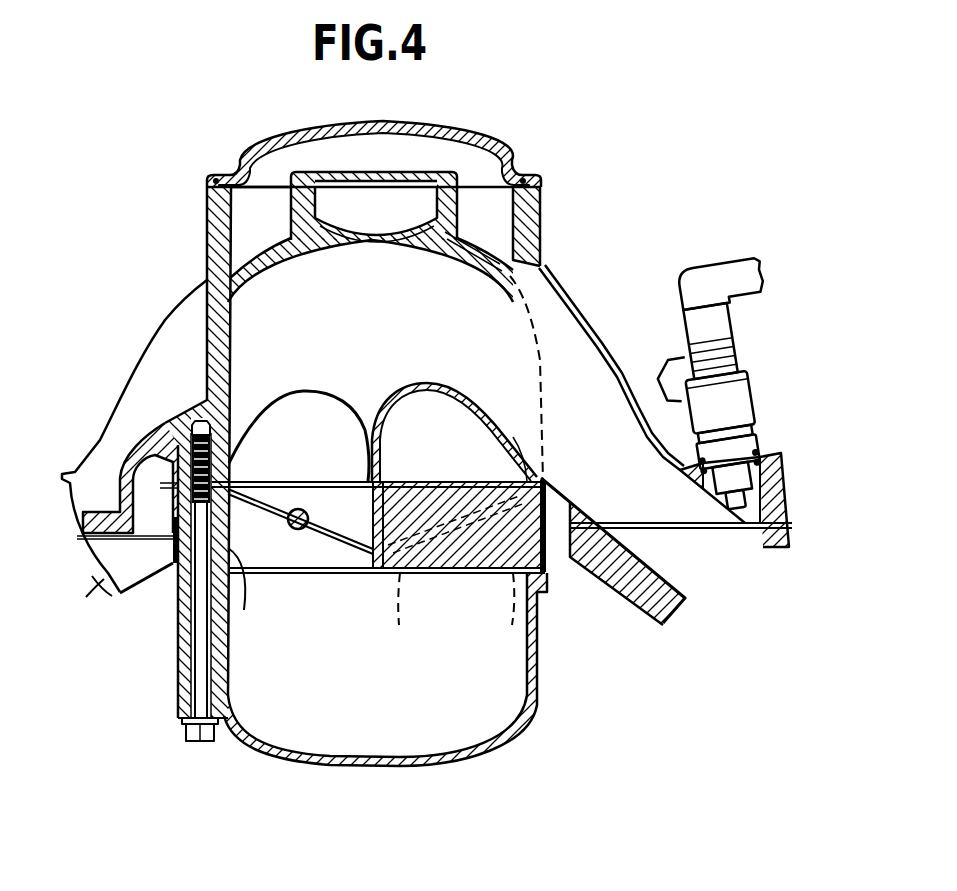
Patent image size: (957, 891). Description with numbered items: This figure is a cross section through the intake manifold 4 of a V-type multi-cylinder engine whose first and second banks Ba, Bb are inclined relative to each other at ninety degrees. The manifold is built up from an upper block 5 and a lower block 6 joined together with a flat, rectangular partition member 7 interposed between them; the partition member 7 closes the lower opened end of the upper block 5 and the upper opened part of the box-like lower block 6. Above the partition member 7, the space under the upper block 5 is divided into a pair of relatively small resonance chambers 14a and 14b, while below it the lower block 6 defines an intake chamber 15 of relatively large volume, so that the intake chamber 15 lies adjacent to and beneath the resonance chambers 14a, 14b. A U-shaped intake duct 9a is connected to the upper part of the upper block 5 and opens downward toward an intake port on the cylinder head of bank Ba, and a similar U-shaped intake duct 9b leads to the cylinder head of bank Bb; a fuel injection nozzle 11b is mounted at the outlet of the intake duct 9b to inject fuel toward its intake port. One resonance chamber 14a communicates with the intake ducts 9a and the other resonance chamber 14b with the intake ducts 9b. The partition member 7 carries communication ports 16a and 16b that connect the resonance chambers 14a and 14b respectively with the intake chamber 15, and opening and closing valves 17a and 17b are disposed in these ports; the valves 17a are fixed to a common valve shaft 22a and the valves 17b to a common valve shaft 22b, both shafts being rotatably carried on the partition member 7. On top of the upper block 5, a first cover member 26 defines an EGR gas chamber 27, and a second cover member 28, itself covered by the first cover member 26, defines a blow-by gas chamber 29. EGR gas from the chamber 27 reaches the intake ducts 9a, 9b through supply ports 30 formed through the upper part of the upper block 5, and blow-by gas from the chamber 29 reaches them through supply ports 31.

The intake manifold 4 is at (553, 206).
The upper block 5 is at (203, 359).
The lower block 6 is at (178, 674).
The partition member 7 is at (162, 575).
The intake duct 9a is at (165, 317).
The intake duct 9b is at (580, 310).
The fuel injection nozzle 11b is at (744, 377).
The resonance chamber 14a is at (447, 450).
The resonance chamber 14b is at (318, 451).
The intake chamber 15 is at (377, 706).
The communication port 16a is at (488, 615).
The communication port 16b is at (250, 603).
The opening and closing valve 17a is at (399, 616).
The opening and closing valve 17b is at (348, 547).
The valve shaft 22a is at (454, 574).
The valve shaft 22b is at (297, 530).
The first cover member 26 is at (481, 138).
The EGR gas chamber 27 is at (290, 148).
The second cover member 28 is at (371, 172).
The blow-by gas chamber 29 is at (418, 208).
The supply port 30 is at (490, 257).
The supply port 31 is at (366, 241).
The first bank Ba is at (110, 595).
The second bank Bb is at (621, 574).